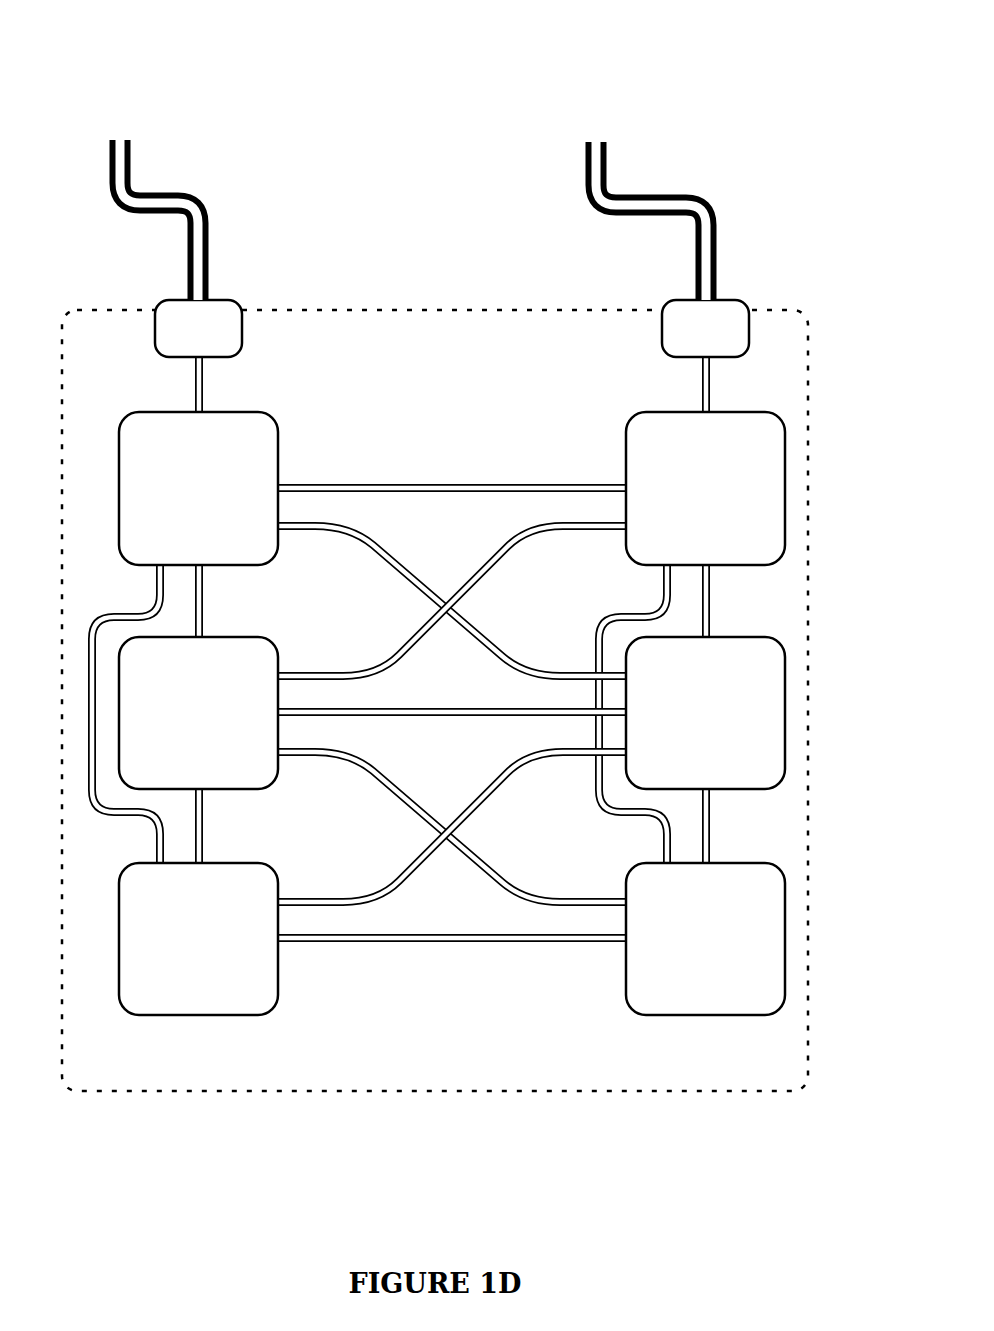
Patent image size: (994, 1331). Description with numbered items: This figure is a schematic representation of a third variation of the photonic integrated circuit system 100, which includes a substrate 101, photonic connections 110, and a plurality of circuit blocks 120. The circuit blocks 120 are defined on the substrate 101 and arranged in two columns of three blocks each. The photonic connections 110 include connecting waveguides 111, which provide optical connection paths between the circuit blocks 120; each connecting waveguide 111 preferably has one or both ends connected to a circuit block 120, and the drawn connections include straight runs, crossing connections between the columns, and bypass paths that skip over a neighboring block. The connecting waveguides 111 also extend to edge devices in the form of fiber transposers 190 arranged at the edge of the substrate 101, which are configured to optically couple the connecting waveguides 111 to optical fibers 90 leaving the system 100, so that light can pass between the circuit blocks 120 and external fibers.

The photonic integrated circuit system 100 is at (438, 626).
The substrate 101 is at (435, 700).
The optical fibers 90 is at (192, 161).
The fiber transposers 190 is at (452, 328).
The circuit blocks 120 is at (452, 713).
The photonic connections 110 is at (399, 713).
The connecting waveguides 111 is at (421, 483).